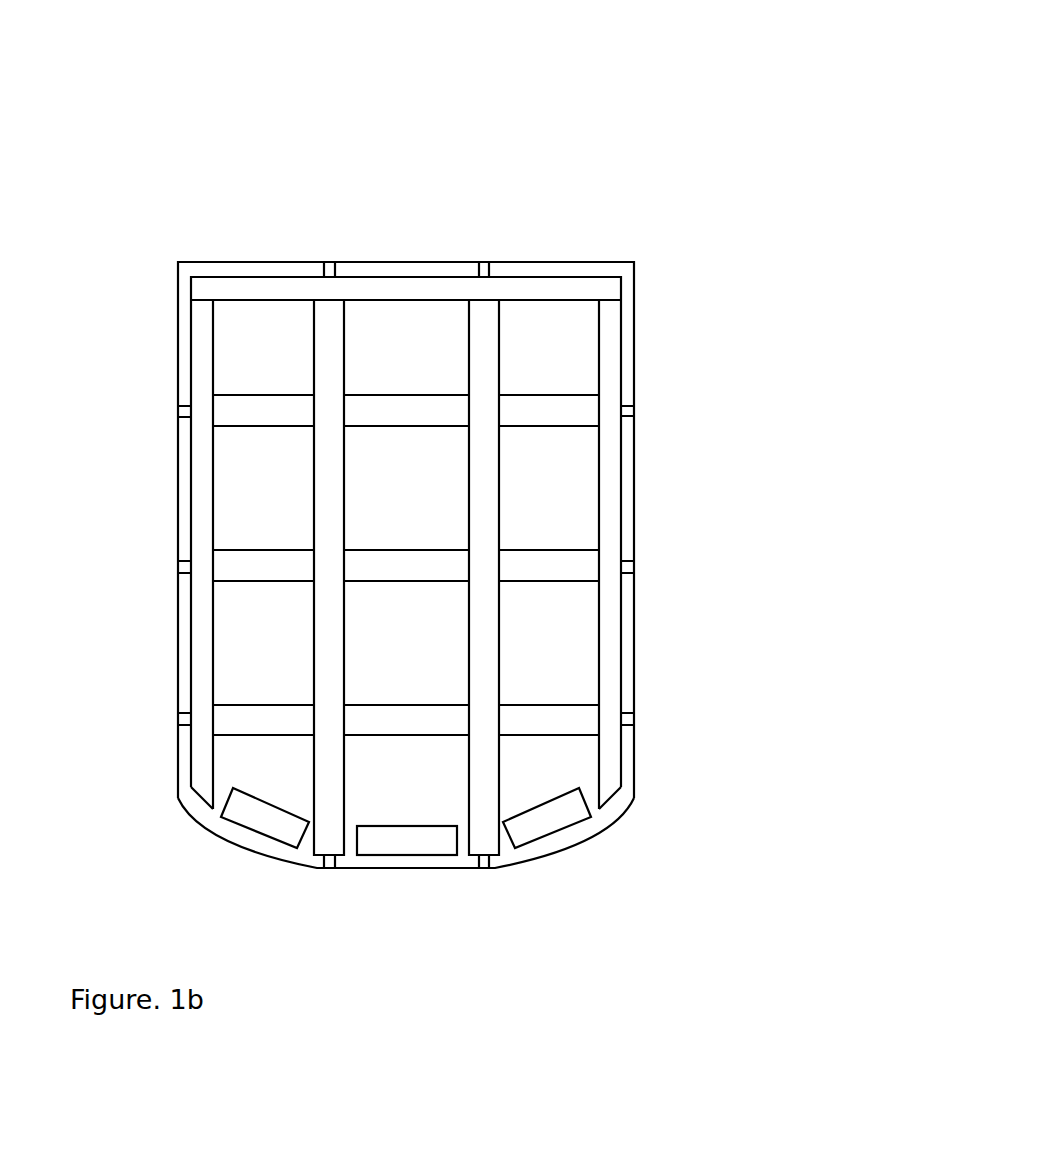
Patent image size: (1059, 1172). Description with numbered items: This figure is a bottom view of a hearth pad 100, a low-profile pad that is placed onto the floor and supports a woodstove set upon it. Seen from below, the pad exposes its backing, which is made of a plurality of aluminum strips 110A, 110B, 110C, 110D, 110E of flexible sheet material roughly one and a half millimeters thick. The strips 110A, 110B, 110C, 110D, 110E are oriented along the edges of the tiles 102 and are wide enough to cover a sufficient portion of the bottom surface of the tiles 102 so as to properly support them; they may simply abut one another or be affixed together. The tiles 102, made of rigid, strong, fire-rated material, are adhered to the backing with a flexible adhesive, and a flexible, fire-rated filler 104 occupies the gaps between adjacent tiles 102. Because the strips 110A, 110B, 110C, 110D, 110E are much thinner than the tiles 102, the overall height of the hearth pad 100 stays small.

The hearth pad 100 is at (697, 130).
The tiles 102 is at (635, 327).
The filler 104 is at (632, 409).
The aluminum strip 110A is at (323, 287).
The aluminum strip 110B is at (322, 365).
The aluminum strip 110C is at (200, 388).
The aluminum strip 110D is at (535, 417).
The aluminum strip 110E is at (245, 812).